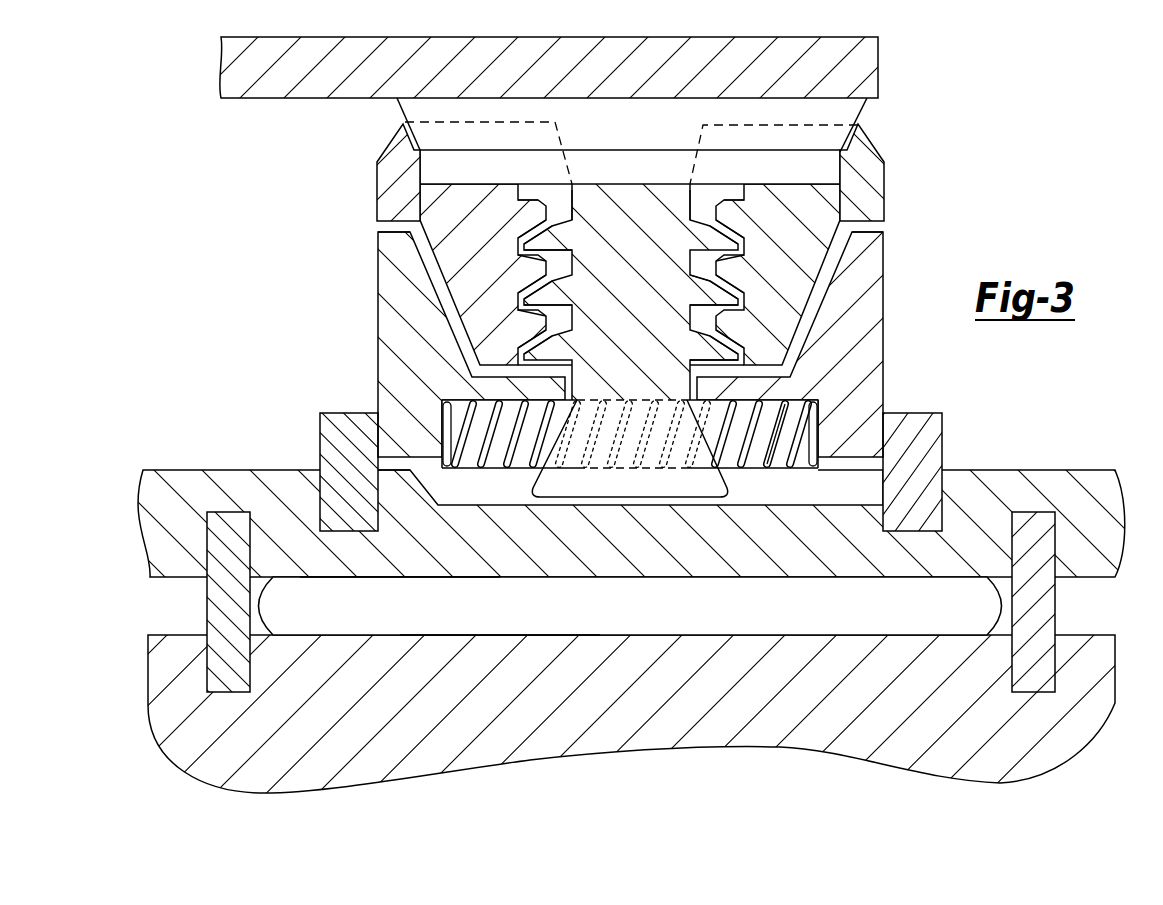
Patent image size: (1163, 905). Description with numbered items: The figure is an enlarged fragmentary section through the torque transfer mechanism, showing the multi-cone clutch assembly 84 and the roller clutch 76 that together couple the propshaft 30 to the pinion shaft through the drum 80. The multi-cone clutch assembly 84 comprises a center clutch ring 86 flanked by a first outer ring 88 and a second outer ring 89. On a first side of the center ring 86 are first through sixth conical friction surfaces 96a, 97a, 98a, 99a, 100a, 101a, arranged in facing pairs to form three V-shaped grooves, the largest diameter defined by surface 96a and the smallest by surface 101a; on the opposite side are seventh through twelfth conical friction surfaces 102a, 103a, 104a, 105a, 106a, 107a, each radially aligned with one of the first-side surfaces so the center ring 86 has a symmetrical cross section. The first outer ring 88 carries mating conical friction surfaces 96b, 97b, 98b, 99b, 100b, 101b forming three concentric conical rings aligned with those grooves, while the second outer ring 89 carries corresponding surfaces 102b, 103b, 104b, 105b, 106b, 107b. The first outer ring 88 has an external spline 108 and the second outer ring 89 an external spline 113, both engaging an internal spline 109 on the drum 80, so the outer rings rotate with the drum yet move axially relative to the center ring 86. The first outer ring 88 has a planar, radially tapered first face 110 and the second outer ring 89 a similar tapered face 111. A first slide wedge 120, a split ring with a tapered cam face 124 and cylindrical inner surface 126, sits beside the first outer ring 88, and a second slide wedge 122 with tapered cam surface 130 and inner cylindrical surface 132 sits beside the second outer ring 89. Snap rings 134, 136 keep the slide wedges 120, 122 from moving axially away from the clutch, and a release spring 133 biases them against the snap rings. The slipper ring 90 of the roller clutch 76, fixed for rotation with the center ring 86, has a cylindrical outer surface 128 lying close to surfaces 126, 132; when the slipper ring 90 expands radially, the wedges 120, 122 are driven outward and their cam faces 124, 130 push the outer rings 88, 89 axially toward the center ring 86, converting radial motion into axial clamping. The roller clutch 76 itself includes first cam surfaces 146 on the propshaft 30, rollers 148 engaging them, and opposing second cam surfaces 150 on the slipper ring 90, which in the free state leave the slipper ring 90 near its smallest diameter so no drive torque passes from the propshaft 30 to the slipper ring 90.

The propshaft 30 is at (1080, 745).
The roller clutch 76 is at (700, 635).
The drum 80 is at (233, 50).
The multi-cone clutch assembly 84 is at (396, 113).
The center clutch ring 86 is at (630, 200).
The first outer ring 88 is at (404, 193).
The second outer ring 89 is at (880, 180).
The slipper ring 90 is at (1000, 510).
The first conical friction surface 96a is at (720, 197).
The first conical friction surface 96b is at (706, 200).
The second conical friction surface 97a is at (727, 240).
The second conical friction surface 97b is at (706, 242).
The third conical friction surface 98a is at (722, 262).
The third conical friction surface 98b is at (718, 270).
The fourth conical friction surface 99a is at (716, 302).
The fourth conical friction surface 99b is at (720, 290).
The fifth conical friction surface 100a is at (738, 328).
The fifth conical friction surface 100b is at (716, 328).
The sixth conical friction surface 101a is at (706, 356).
The sixth conical friction surface 101b is at (742, 352).
The seventh conical friction surface 102a is at (556, 197).
The seventh conical friction surface 102b is at (566, 196).
The eighth conical friction surface 103a is at (528, 222).
The eighth conical friction surface 103b is at (560, 236).
The ninth conical friction surface 104a is at (540, 258).
The ninth conical friction surface 104b is at (565, 258).
The tenth conical friction surface 105a is at (540, 300).
The tenth conical friction surface 105b is at (562, 290).
The eleventh conical friction surface 106a is at (528, 312).
The eleventh conical friction surface 106b is at (566, 312).
The twelfth conical friction surface 107a is at (540, 350).
The twelfth conical friction surface 107b is at (567, 343).
The external spline 108 is at (449, 165).
The internal spline 109 is at (645, 110).
The first face 110 is at (410, 250).
The tapered face 111 is at (845, 250).
The external spline 113 is at (785, 160).
The first slide wedge 120 is at (395, 300).
The second slide wedge 122 is at (877, 385).
The tapered cam face 124 is at (446, 262).
The inner surface 126 is at (401, 460).
The cylindrical outer surface 128 is at (470, 450).
The tapered cam surface 130 is at (822, 230).
The inner cylindrical surface 132 is at (840, 466).
The release spring 133 is at (765, 460).
The snap ring 134 is at (325, 438).
The snap ring 136 is at (945, 430).
The first cam surfaces 146 is at (780, 610).
The rollers 148 is at (475, 612).
The second cam surfaces 150 is at (408, 583).